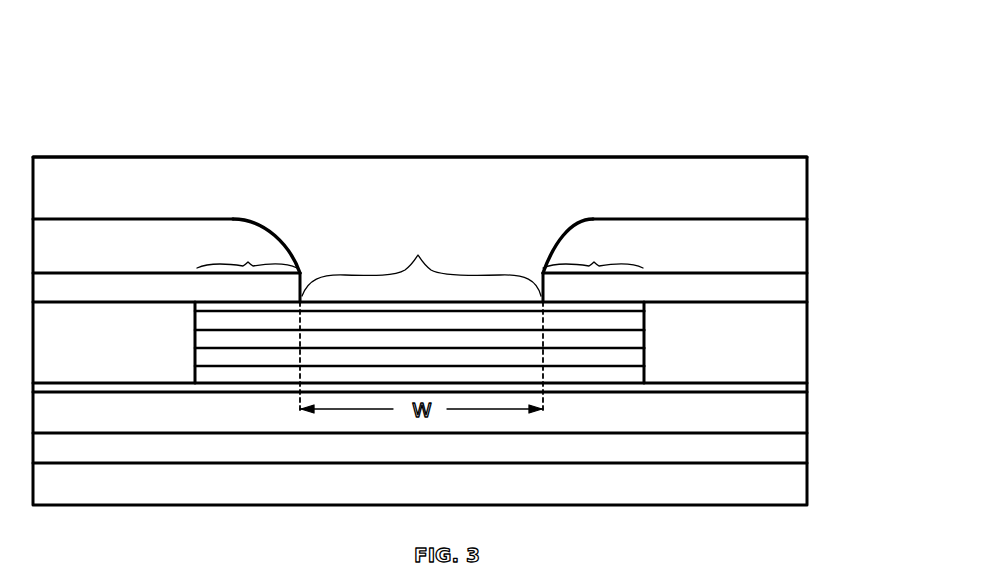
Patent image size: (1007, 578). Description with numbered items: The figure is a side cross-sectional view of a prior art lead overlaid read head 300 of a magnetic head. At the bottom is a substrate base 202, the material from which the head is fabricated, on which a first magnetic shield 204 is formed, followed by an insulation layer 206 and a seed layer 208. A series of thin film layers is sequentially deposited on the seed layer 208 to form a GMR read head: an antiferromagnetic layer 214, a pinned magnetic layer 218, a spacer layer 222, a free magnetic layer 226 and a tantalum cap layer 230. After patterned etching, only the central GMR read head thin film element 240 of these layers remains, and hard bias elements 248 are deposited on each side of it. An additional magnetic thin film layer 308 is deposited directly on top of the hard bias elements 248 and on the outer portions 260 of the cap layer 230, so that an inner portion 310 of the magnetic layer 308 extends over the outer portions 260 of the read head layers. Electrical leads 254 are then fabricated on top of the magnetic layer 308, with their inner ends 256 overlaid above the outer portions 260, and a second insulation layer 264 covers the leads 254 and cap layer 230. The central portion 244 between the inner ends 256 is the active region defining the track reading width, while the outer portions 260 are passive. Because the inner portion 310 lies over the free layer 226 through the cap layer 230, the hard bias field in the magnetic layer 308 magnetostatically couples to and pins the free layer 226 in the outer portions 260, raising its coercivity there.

The lead overlaid read head 300 is at (365, 105).
The substrate base 202 is at (807, 488).
The first magnetic shield 204 is at (807, 447).
The insulation layer 206 is at (807, 411).
The seed layer 208 is at (807, 387).
The antiferromagnetic layer 214 is at (648, 373).
The pinned magnetic layer 218 is at (648, 361).
The spacer layer 222 is at (648, 342).
The free magnetic layer 226 is at (648, 318).
The cap layer 230 is at (648, 304).
The GMR read head thin film element 240 is at (487, 229).
The central portion 244 is at (421, 261).
The hard bias elements 248 is at (85, 298).
The electrical leads 254 is at (192, 217).
The inner ends 256 is at (278, 231).
The outer portions 260 is at (420, 250).
The second insulation layer 264 is at (807, 187).
The magnetic thin film layer 308 is at (145, 278).
The inner portion 310 is at (253, 288).